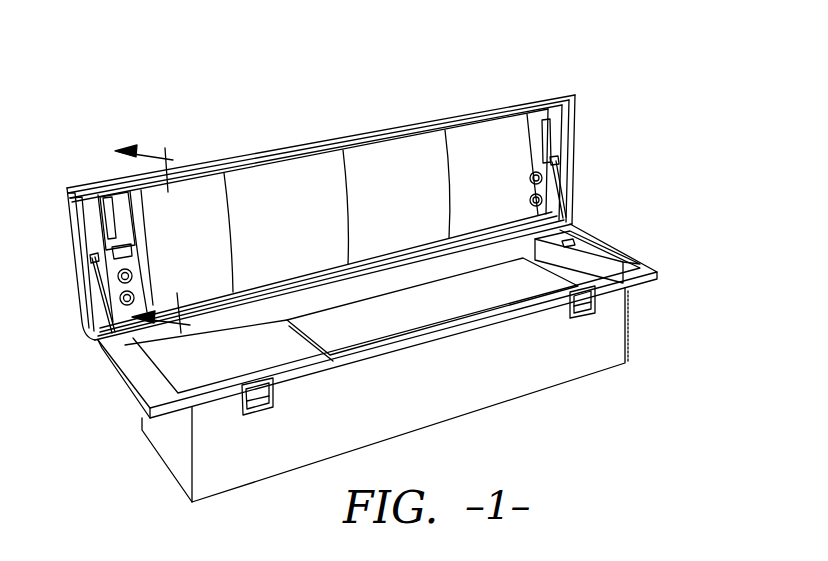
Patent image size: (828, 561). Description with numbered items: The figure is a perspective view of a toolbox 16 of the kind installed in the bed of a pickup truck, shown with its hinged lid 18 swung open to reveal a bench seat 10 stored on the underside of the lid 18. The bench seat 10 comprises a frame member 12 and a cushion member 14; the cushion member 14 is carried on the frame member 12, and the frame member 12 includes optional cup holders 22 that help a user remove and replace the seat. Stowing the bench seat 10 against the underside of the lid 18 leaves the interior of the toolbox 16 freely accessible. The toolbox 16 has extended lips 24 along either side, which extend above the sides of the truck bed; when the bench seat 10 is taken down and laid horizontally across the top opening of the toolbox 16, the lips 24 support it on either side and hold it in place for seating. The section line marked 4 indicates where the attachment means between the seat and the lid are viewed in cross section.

The bench seat 10 is at (398, 158).
The frame member 12 is at (106, 203).
The cushion member 14 is at (273, 180).
The toolbox 16 is at (232, 473).
The hinged lid 18 is at (565, 122).
The cup holders 22 is at (543, 202).
The extended lips 24 is at (658, 268).
The section line 4- 4 is at (152, 238).